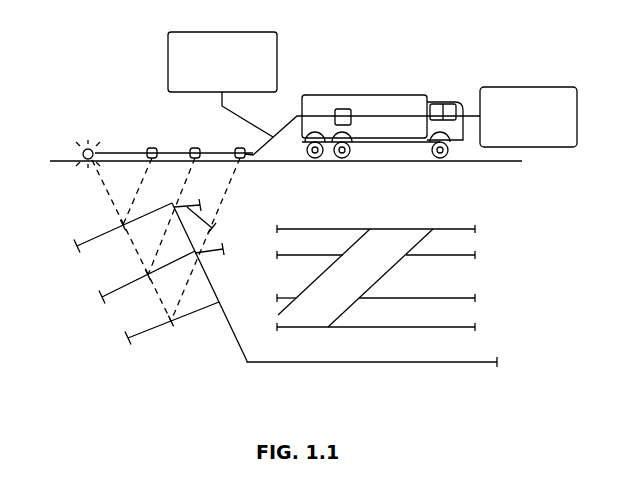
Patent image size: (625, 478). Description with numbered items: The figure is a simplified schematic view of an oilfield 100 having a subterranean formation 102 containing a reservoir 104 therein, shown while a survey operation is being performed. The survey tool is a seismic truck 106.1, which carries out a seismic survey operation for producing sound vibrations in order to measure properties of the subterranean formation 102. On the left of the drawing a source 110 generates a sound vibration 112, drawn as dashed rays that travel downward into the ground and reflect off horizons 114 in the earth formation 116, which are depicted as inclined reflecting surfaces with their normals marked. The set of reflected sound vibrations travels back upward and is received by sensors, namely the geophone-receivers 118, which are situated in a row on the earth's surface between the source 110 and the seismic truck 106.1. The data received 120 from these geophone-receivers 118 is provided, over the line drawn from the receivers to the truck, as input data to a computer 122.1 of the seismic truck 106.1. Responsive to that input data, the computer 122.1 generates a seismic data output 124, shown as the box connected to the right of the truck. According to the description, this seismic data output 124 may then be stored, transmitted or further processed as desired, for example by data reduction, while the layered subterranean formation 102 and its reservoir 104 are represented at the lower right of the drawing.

The oilfield 100 is at (486, 60).
The subterranean formation 102 is at (460, 212).
The reservoir 104 is at (452, 289).
The seismic truck 106.1 is at (405, 94).
The source 110 is at (80, 148).
The sound vibration 112 is at (102, 184).
The horizons 114 is at (87, 238).
The earth formation 116 is at (235, 333).
The geophone-receivers 118 is at (237, 149).
The data received 120 is at (197, 32).
The computer 122.1 is at (341, 108).
The seismic data output 124 is at (550, 86).